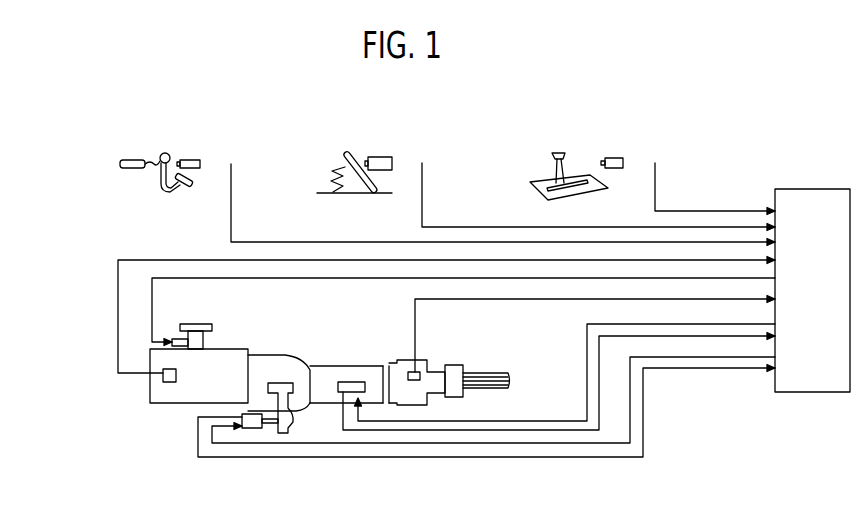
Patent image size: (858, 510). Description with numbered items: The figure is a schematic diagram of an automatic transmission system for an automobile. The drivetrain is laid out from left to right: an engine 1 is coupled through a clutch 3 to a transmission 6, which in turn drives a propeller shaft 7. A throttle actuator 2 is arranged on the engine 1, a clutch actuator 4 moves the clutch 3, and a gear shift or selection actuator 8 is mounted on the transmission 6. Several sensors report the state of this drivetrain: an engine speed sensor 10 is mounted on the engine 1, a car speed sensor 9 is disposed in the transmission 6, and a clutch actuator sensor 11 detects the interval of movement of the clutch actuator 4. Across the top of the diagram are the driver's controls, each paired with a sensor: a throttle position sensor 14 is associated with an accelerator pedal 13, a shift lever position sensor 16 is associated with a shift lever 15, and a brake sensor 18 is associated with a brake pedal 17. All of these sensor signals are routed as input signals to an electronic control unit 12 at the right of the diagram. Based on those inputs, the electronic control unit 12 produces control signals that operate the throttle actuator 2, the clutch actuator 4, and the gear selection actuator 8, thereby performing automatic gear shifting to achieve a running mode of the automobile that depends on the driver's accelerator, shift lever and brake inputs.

The engine 1 is at (217, 385).
The throttle actuator 2 is at (173, 338).
The clutch 3 is at (269, 383).
The clutch actuator 4 is at (258, 429).
The transmission 6 is at (407, 398).
The propeller shaft 7 is at (484, 372).
The gear selection actuator 8 is at (348, 381).
The car speed sensor 9 is at (412, 371).
The engine speed sensor 10 is at (168, 382).
The clutch actuator sensor 11 is at (245, 429).
The electronic control unit 12 is at (823, 291).
The accelerator pedal 13 is at (355, 154).
The throttle position sensor 14 is at (382, 157).
The shift lever 15 is at (568, 172).
The shift lever position sensor 16 is at (610, 158).
The brake pedal 17 is at (172, 157).
The brake sensor 18 is at (198, 160).